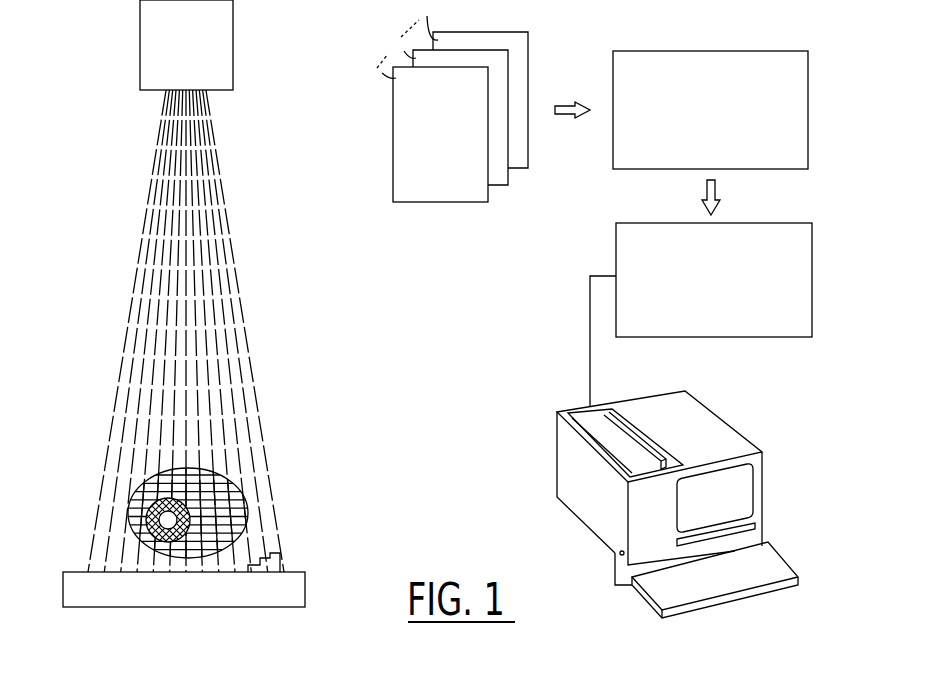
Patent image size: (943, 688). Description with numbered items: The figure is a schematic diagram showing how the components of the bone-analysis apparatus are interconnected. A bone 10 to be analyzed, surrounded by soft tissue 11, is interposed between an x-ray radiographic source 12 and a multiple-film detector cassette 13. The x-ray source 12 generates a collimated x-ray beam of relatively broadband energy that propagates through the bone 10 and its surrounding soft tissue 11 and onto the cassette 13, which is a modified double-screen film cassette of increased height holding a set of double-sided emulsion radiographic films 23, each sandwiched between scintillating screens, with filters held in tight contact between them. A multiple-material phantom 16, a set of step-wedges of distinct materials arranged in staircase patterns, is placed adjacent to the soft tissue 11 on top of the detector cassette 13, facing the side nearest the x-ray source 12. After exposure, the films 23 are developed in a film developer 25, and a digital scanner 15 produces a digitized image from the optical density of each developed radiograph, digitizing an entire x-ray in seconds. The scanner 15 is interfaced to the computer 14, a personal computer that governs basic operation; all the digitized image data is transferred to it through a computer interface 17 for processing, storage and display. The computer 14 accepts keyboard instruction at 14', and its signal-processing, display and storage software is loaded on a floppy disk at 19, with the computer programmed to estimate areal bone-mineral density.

The bone 10 is at (148, 522).
The soft tissue 11 is at (140, 490).
The x-ray radiographic source 12 is at (140, 42).
The multiple-film detector cassette 13 is at (148, 609).
The computer means 14 is at (662, 488).
The keyboard instruction 14' is at (742, 578).
The digital scanner 15 is at (793, 338).
The multiple-material phantom 16 is at (283, 563).
The computer interface 17 is at (612, 433).
The floppy disk loading location 19 is at (757, 528).
The double-sided emulsion radiographic films 23 is at (447, 204).
The film developer 25 is at (623, 170).